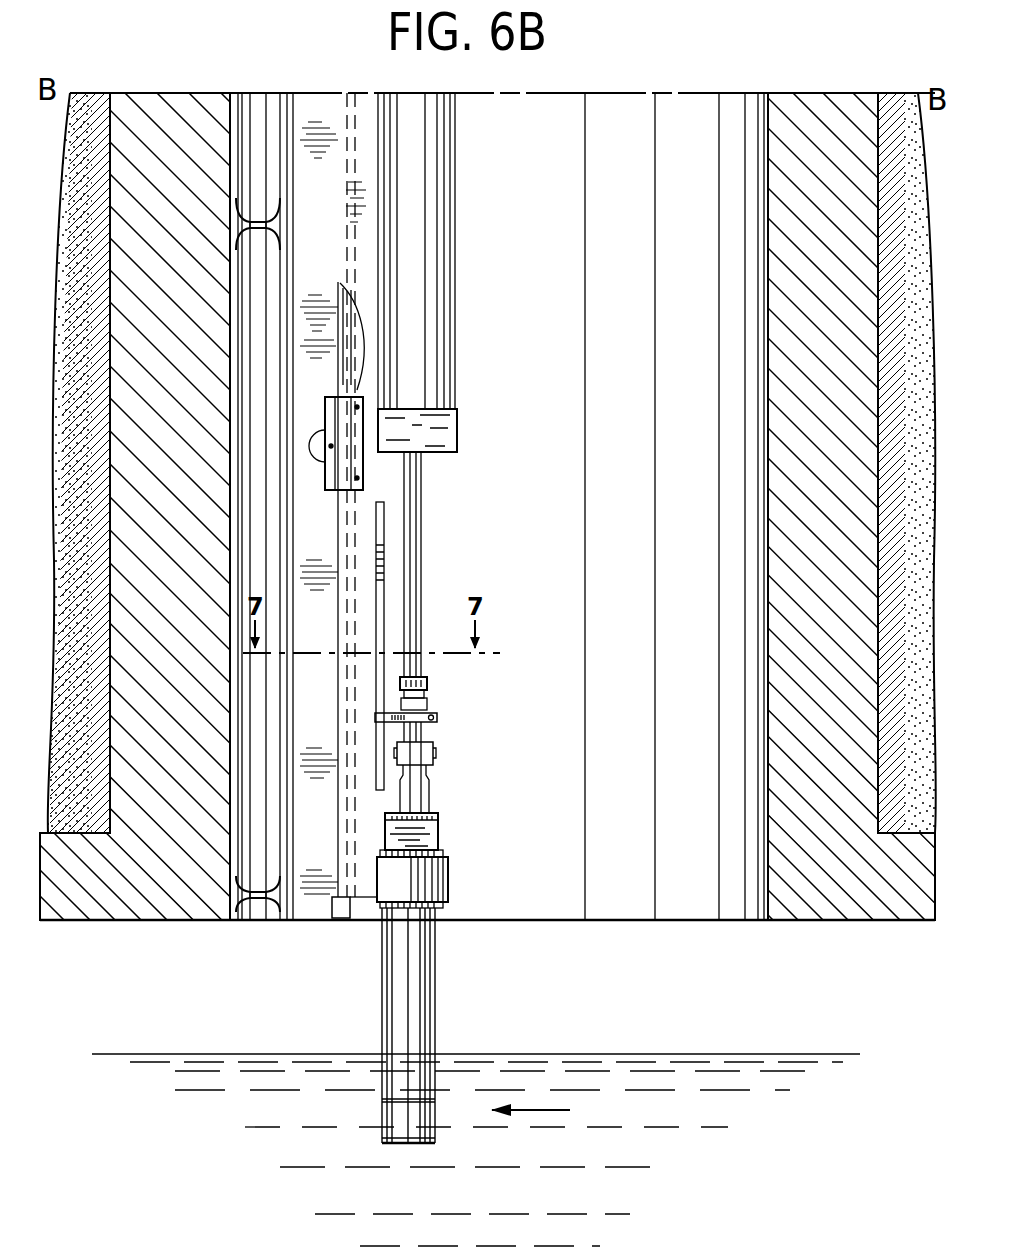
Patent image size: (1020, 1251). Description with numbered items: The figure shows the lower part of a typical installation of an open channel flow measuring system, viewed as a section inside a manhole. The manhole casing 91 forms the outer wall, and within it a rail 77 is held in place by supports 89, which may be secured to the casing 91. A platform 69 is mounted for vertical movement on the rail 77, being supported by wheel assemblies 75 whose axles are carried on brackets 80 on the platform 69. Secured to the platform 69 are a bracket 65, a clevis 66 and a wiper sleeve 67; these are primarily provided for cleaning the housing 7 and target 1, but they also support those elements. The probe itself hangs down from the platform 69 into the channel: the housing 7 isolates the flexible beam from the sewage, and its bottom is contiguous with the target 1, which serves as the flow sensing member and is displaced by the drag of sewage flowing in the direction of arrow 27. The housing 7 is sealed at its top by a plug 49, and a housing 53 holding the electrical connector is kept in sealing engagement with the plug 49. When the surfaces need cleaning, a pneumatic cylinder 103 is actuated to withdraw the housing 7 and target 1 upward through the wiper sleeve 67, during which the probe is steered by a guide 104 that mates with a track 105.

The target 1 is at (439, 1138).
The housing 7 is at (424, 1006).
The arrow indicating direction of flow 27 is at (548, 1088).
The plug 49 is at (438, 815).
The housing 53 is at (429, 788).
The bracket 65 is at (418, 756).
The clevis 66 is at (424, 736).
The wiper sleeve 67 is at (440, 874).
The platform 69 is at (334, 925).
The wheel assemblies 75 is at (332, 500).
The rail 77 is at (331, 709).
The brackets 80 is at (334, 397).
The supports 89 is at (266, 240).
The casing 91 is at (775, 383).
The pneumatic cylinder 103 is at (420, 276).
The guide 104 is at (415, 717).
The track 105 is at (383, 580).